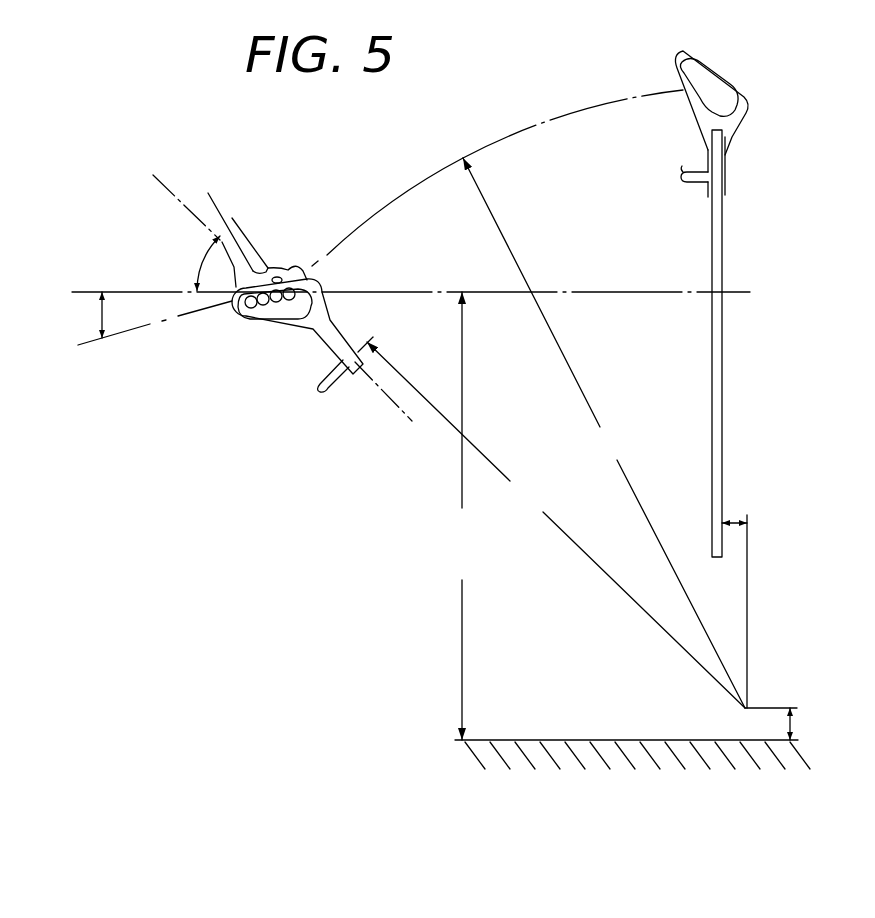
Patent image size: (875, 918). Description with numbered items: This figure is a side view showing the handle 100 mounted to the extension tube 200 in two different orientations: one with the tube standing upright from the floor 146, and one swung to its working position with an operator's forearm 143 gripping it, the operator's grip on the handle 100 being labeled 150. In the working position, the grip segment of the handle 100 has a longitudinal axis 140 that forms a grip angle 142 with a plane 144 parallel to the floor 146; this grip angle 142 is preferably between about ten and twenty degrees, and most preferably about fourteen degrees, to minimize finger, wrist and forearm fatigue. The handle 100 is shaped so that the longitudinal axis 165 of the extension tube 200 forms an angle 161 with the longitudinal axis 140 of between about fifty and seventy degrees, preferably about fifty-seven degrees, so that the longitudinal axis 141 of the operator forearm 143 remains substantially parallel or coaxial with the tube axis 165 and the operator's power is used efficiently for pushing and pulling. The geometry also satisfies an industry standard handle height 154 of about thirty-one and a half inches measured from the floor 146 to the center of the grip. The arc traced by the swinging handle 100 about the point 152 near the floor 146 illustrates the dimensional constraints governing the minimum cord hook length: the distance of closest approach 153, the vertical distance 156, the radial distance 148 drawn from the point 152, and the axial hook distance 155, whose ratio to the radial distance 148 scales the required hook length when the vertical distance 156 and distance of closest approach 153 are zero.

The handle 100 is at (343, 333).
The longitudinal axis 140 is at (146, 328).
The longitudinal axis of operator forearm 141 is at (163, 185).
The grip angle 142 is at (99, 315).
The operator forearm 143 is at (232, 218).
The plane parallel to floor 144 is at (95, 258).
The floor 146 is at (552, 715).
The radial distance 148 is at (528, 399).
The hand 150 is at (285, 266).
The pivot point 152 is at (747, 702).
The distance of closest approach 153 is at (737, 520).
The handle height 154 is at (459, 516).
The axial hook distance 155 is at (551, 522).
The vertical distance 156 is at (795, 725).
The angle 161 is at (203, 263).
The longitudinal axis of extension tube 165 is at (412, 421).
The extension tube 200 is at (722, 417).